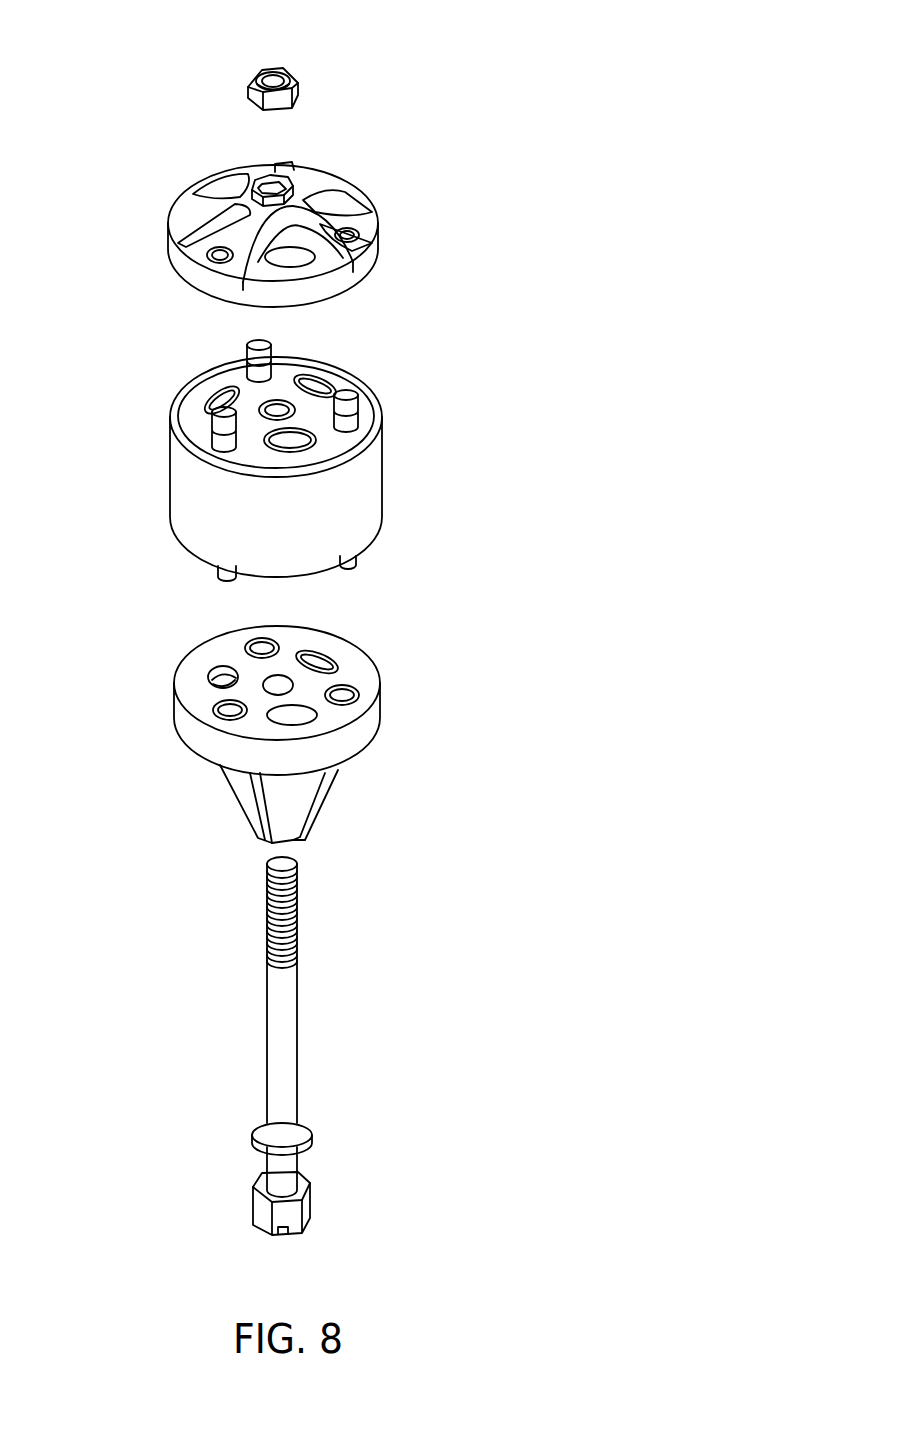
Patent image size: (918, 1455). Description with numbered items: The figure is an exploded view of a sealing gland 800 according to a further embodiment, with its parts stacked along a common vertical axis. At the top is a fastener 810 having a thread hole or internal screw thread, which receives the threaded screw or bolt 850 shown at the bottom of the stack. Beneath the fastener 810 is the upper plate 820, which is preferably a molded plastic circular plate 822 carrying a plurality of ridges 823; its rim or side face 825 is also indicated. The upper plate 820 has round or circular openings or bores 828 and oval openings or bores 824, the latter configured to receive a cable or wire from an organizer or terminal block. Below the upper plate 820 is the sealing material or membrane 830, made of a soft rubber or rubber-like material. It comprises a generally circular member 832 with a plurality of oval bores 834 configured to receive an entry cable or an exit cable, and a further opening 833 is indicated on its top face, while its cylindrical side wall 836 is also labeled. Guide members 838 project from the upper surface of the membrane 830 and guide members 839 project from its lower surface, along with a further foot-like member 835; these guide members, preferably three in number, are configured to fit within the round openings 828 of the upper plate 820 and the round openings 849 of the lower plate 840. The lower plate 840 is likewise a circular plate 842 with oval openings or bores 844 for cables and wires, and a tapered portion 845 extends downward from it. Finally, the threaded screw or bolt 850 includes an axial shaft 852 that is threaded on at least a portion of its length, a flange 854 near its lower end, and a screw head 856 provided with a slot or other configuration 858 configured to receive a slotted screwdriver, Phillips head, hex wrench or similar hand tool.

The sealing gland 800 is at (445, 38).
The fastener 810 is at (320, 99).
The upper plate 820 is at (408, 211).
The circular plate 822 is at (380, 257).
The ridges 823 is at (335, 187).
The oval openings or bores 824 is at (290, 262).
The rim 825 is at (353, 280).
The round or circular openings or bores 828 is at (220, 259).
The sealing material or membrane 830 is at (446, 457).
The circular member 832 is at (380, 398).
The elongated opening 833 is at (328, 438).
The oval bores 834 is at (318, 388).
The foot 835 is at (327, 568).
The side wall 836 is at (176, 518).
The guide members 838 is at (220, 426).
The guide members 839 is at (230, 580).
The lower plate 840 is at (446, 703).
The circular plate 842 is at (372, 657).
The oval openings or bores 844 is at (317, 660).
The tapered fingers 845 is at (332, 727).
The round or circular openings or bores 849 is at (225, 712).
The threaded screw or bolt 850 is at (428, 1006).
The axial shaft 852 is at (297, 978).
The flange 854 is at (310, 1137).
The screw head 856 is at (312, 1200).
The slot or other configuration 858 is at (290, 1248).